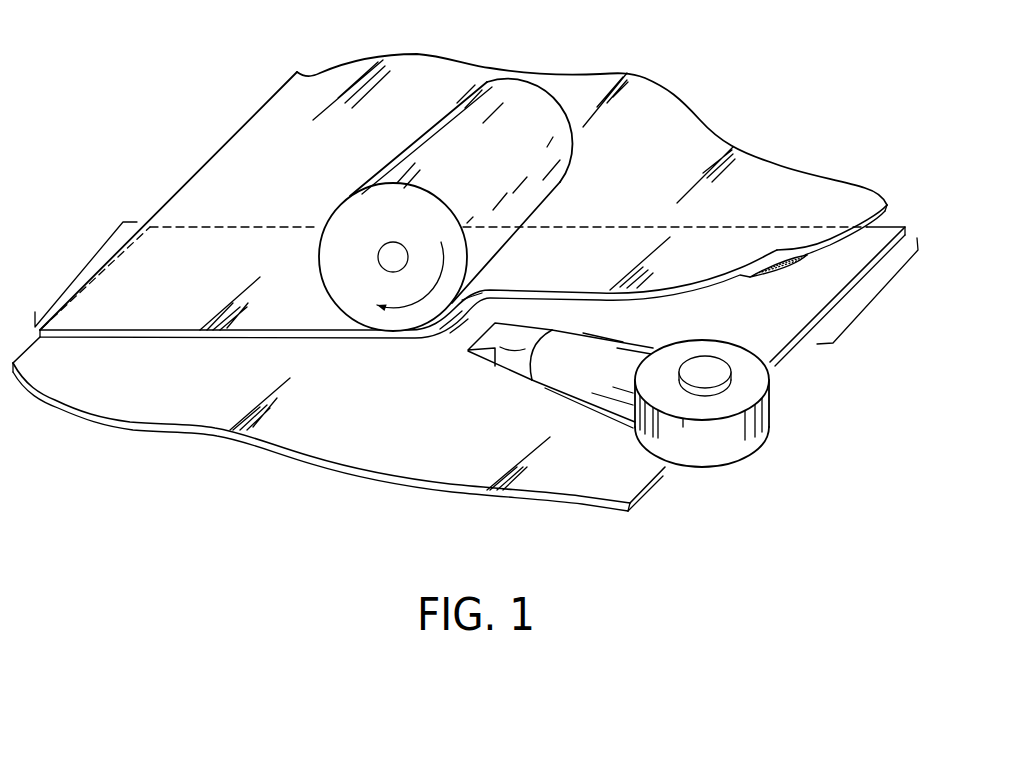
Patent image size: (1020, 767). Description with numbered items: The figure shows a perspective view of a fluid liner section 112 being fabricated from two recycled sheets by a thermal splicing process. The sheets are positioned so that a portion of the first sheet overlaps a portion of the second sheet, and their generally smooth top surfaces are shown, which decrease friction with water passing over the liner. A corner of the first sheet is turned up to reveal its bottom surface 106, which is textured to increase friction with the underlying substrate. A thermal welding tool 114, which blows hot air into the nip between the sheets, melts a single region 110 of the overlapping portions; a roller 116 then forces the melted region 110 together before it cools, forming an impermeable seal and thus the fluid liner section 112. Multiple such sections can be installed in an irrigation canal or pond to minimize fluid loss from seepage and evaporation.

The fluid liner section 112 is at (153, 60).
The bottom surface 106 is at (782, 270).
The heat welded region 110 is at (510, 312).
The thermal welding tool 114 is at (772, 405).
The roller 116 is at (572, 143).